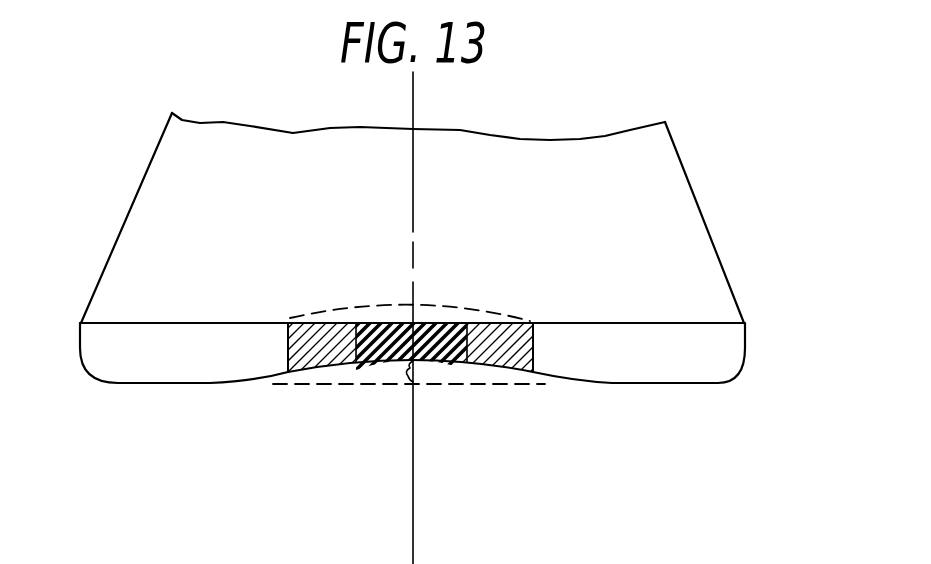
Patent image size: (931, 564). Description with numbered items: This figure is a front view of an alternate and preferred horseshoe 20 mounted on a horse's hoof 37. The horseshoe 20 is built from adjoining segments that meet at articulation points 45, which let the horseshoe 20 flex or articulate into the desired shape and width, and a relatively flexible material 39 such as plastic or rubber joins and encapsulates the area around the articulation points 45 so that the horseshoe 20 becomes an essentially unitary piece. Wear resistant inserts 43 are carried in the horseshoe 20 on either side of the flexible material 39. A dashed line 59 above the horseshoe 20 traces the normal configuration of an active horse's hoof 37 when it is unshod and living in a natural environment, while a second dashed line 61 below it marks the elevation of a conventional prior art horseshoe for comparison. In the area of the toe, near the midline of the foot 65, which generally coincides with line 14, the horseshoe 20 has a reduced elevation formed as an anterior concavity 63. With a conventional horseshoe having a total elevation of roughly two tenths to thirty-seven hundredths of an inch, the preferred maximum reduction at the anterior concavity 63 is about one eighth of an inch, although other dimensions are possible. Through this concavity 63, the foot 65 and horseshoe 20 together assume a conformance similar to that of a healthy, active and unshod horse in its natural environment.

The line 14— 14 is at (413, 498).
The horseshoe 20 is at (768, 333).
The horse's hoof 37 is at (705, 217).
The relatively flexible material 39 is at (380, 323).
The wear resistant inserts 43 is at (313, 347).
The articulation point 45 is at (437, 345).
The dashed line 59 is at (455, 308).
The dashed line 61 is at (427, 385).
The anterior concavity 63 is at (405, 368).
The foot 65 is at (675, 150).